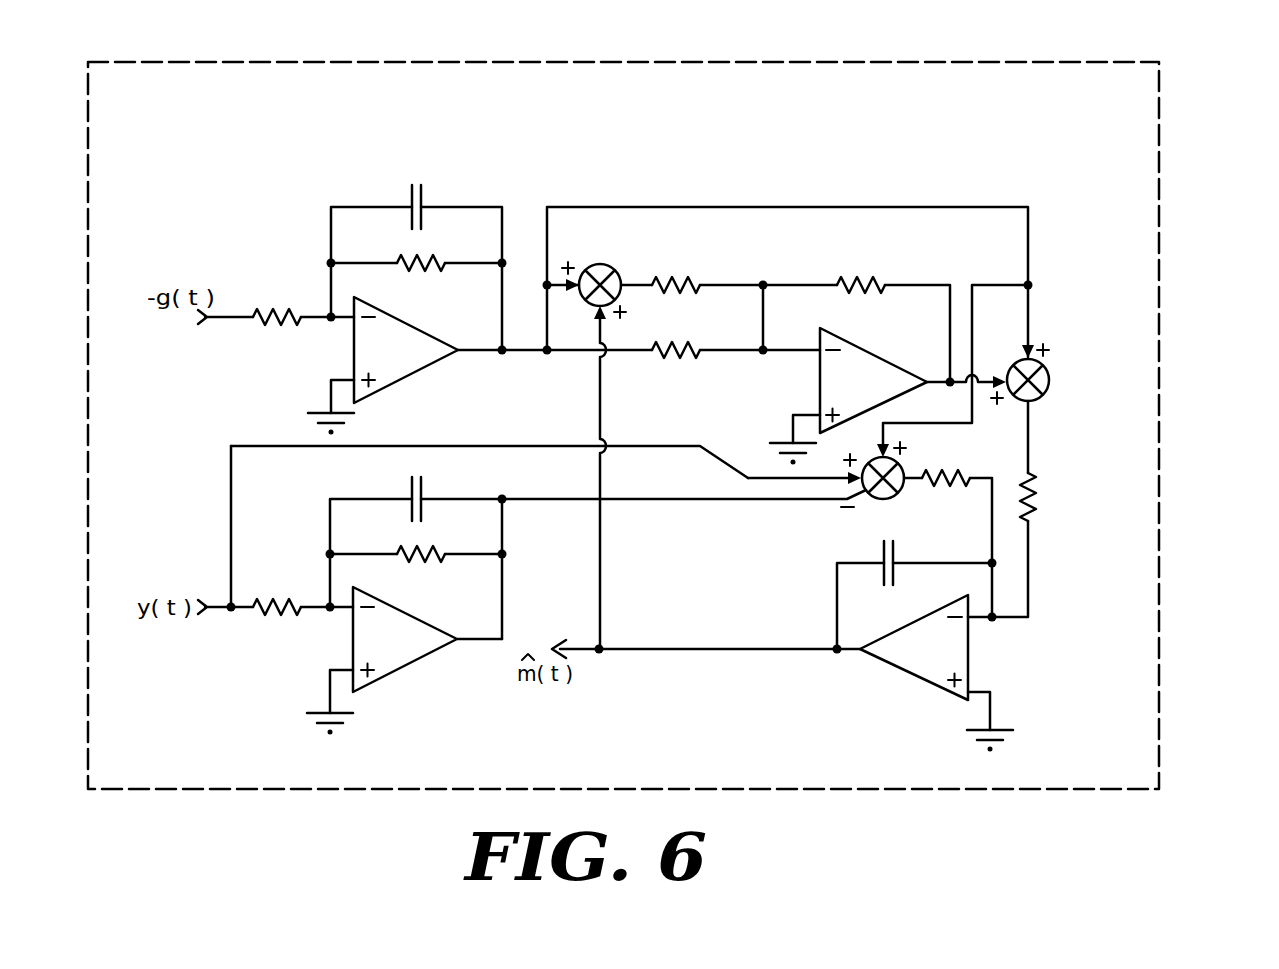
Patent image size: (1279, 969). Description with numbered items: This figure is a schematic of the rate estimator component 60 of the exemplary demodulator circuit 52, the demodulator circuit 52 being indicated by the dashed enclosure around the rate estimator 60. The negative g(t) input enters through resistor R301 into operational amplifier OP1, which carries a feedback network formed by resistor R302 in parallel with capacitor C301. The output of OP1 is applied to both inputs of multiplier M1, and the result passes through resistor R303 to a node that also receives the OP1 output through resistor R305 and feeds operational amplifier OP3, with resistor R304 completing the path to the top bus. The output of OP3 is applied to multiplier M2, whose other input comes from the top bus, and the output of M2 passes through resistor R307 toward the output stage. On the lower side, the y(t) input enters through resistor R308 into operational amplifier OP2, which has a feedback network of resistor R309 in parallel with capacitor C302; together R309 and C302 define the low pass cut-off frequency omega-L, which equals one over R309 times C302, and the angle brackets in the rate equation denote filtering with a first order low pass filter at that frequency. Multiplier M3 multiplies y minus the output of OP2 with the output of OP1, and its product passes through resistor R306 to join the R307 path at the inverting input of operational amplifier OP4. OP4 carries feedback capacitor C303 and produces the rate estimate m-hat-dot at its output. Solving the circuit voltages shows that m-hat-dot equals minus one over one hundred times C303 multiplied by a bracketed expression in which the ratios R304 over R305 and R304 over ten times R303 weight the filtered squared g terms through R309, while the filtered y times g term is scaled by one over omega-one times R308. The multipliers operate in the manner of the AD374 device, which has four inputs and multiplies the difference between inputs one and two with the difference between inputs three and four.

The demodulator circuit 52 is at (1160, 148).
The rate estimator component 60 is at (912, 168).
The resistor R301 is at (303, 302).
The resistor R302 is at (416, 276).
The resistor R303 is at (692, 271).
The resistor R304 is at (856, 316).
The resistor R305 is at (707, 321).
The resistor R306 is at (948, 531).
The resistor R307 is at (1043, 509).
The resistor R308 is at (292, 530).
The resistor R309 is at (416, 570).
The capacitor C301 is at (416, 263).
The capacitor C302 is at (416, 558).
The capacitor C303 is at (914, 591).
The operational amplifier OP1 is at (383, 366).
The operational amplifier OP2 is at (404, 661).
The operational amplifier OP3 is at (848, 396).
The operational amplifier OP4 is at (936, 673).
The multiplier M1 is at (586, 444).
The multiplier M2 is at (1040, 374).
The multiplier M3 is at (704, 483).